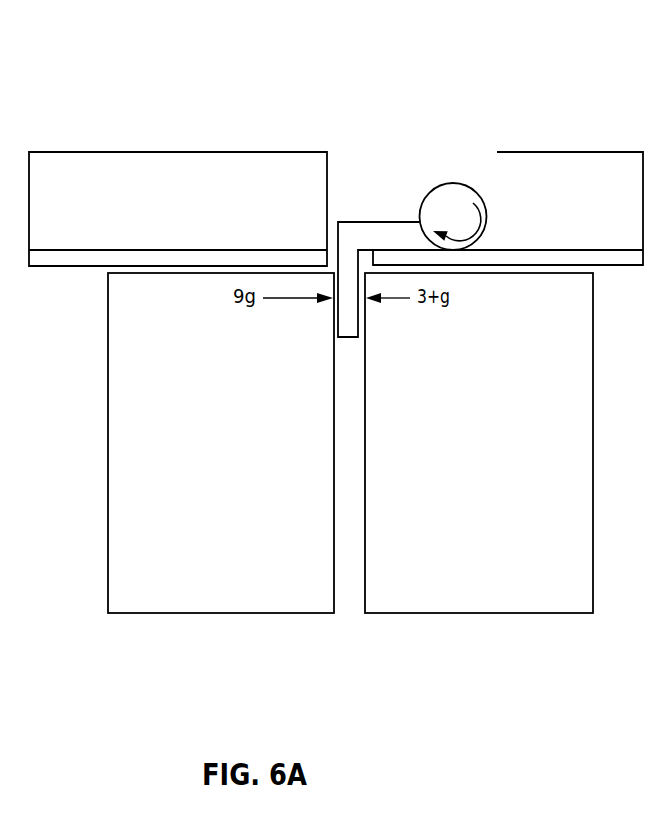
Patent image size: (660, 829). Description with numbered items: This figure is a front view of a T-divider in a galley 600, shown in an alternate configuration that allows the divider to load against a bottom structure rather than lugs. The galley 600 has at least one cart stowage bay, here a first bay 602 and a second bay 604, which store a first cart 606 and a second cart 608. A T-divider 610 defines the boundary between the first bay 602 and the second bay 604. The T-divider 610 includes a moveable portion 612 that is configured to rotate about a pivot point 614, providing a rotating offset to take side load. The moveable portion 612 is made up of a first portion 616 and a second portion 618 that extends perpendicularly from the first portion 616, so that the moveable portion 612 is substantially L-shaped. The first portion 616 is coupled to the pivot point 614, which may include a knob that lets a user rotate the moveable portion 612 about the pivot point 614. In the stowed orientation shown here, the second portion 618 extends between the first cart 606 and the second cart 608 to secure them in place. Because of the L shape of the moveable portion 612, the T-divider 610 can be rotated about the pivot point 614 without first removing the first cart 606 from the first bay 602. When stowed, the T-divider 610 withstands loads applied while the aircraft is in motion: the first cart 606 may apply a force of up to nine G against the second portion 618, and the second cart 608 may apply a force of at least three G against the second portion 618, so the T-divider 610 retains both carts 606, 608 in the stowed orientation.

The galley 600 is at (118, 127).
The first bay 602 is at (137, 656).
The second bay 604 is at (561, 656).
The first cart 606 is at (263, 588).
The second cart 608 is at (527, 597).
The T-divider 610 is at (340, 128).
The moveable portion 612 is at (376, 151).
The pivot point 614 is at (456, 205).
The first portion 616 is at (357, 237).
The second portion 618 is at (350, 320).